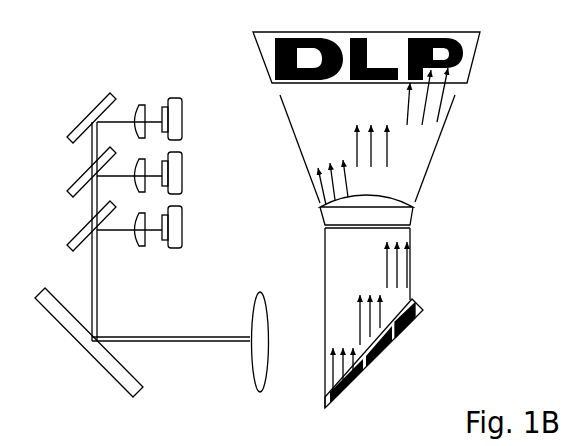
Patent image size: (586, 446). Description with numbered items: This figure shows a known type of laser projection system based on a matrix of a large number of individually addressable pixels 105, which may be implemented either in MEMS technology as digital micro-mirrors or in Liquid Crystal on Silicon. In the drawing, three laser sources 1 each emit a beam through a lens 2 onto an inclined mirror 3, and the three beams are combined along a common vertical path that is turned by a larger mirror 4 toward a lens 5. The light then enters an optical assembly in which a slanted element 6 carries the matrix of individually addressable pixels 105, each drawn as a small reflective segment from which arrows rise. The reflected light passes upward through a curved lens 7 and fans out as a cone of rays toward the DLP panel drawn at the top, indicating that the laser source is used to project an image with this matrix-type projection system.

The laser light source 1 is at (185, 173).
The collimating lens 2 is at (140, 160).
The dichroic mirror 3 is at (91, 171).
The reflecting mirror 4 is at (89, 342).
The condenser lens 5 is at (260, 328).
The micro-mirror array 6 is at (374, 325).
The projection lens 7 is at (379, 211).
The individually addressable pixels 105 is at (404, 343).